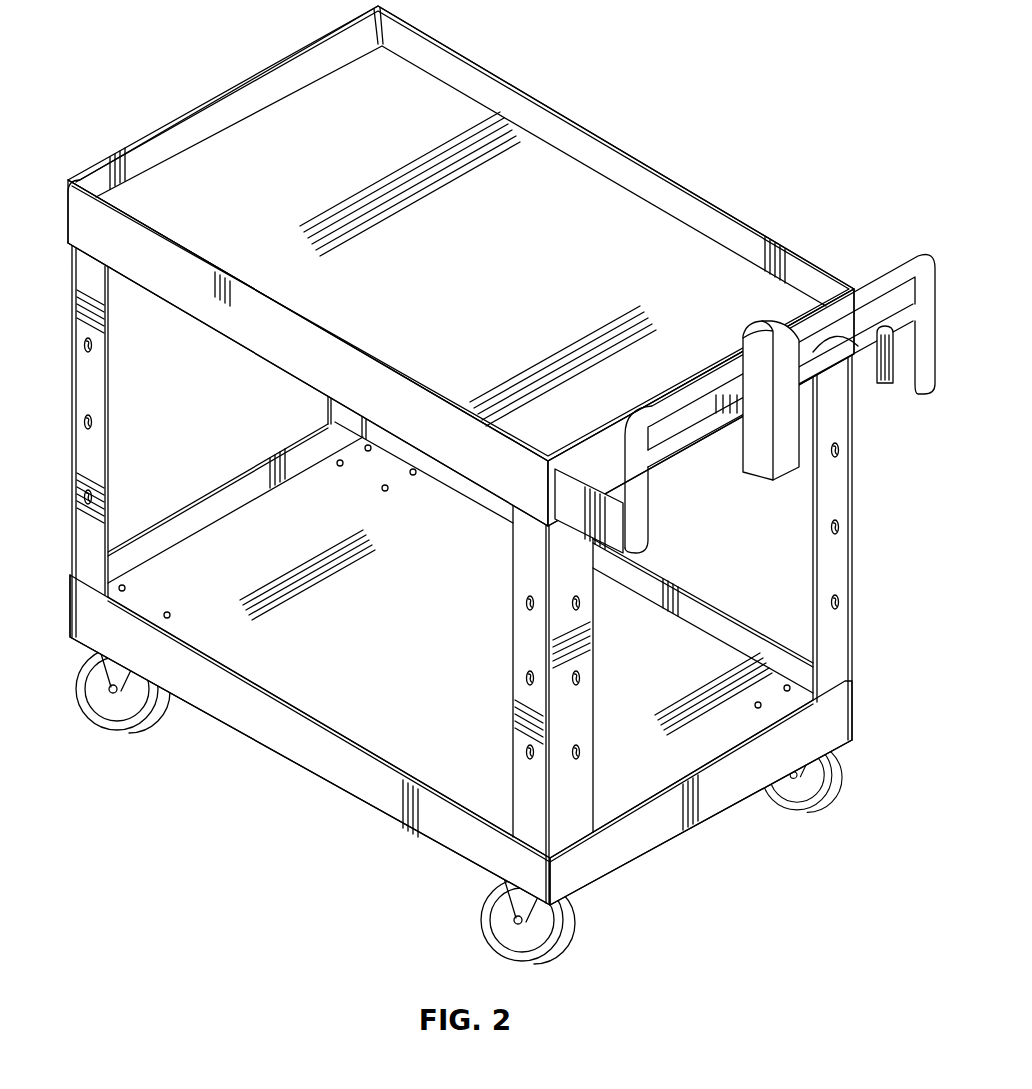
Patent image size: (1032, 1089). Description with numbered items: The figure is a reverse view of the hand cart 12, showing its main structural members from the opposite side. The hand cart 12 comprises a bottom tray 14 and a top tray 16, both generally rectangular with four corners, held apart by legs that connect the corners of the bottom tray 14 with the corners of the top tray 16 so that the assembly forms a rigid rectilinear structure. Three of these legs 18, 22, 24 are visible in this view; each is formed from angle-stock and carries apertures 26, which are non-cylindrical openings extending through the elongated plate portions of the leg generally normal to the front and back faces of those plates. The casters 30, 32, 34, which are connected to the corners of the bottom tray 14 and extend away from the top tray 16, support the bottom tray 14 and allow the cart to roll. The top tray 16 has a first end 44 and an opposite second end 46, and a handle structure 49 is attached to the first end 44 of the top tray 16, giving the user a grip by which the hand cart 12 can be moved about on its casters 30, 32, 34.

The hand cart 12 is at (650, 130).
The bottom tray 14 is at (431, 646).
The top tray 16 is at (461, 266).
The leg 18 is at (838, 640).
The leg 22 is at (87, 537).
The leg 24 is at (580, 650).
The aperture 26 is at (88, 413).
The caster 30 is at (106, 706).
The caster 32 is at (558, 940).
The caster 34 is at (823, 789).
The first end 44 is at (819, 346).
The second end 46 is at (208, 105).
The handle structure 49 is at (698, 384).